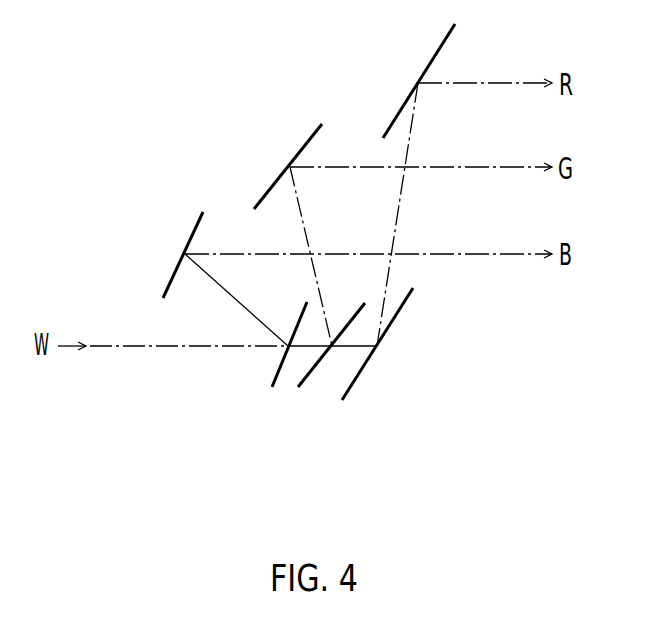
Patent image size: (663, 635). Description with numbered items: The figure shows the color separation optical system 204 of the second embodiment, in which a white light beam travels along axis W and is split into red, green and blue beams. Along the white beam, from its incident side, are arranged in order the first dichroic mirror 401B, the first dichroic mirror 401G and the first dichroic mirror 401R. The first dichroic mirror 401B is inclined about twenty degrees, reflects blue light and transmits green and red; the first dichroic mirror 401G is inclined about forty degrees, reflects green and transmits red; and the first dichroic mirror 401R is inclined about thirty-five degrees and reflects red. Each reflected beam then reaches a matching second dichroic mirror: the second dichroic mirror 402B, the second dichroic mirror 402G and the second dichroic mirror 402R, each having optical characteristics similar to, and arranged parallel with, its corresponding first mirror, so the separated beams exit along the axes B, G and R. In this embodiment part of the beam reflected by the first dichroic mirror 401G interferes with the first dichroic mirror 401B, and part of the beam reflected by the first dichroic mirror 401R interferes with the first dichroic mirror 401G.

The color separation optical system 204 is at (143, 128).
The second dichroic mirror 402R is at (443, 43).
The second dichroic mirror 402G is at (305, 140).
The second dichroic mirror 402B is at (193, 222).
The first dichroic mirror 401B is at (267, 380).
The first dichroic mirror 401G is at (298, 388).
The first dichroic mirror 401R is at (402, 308).